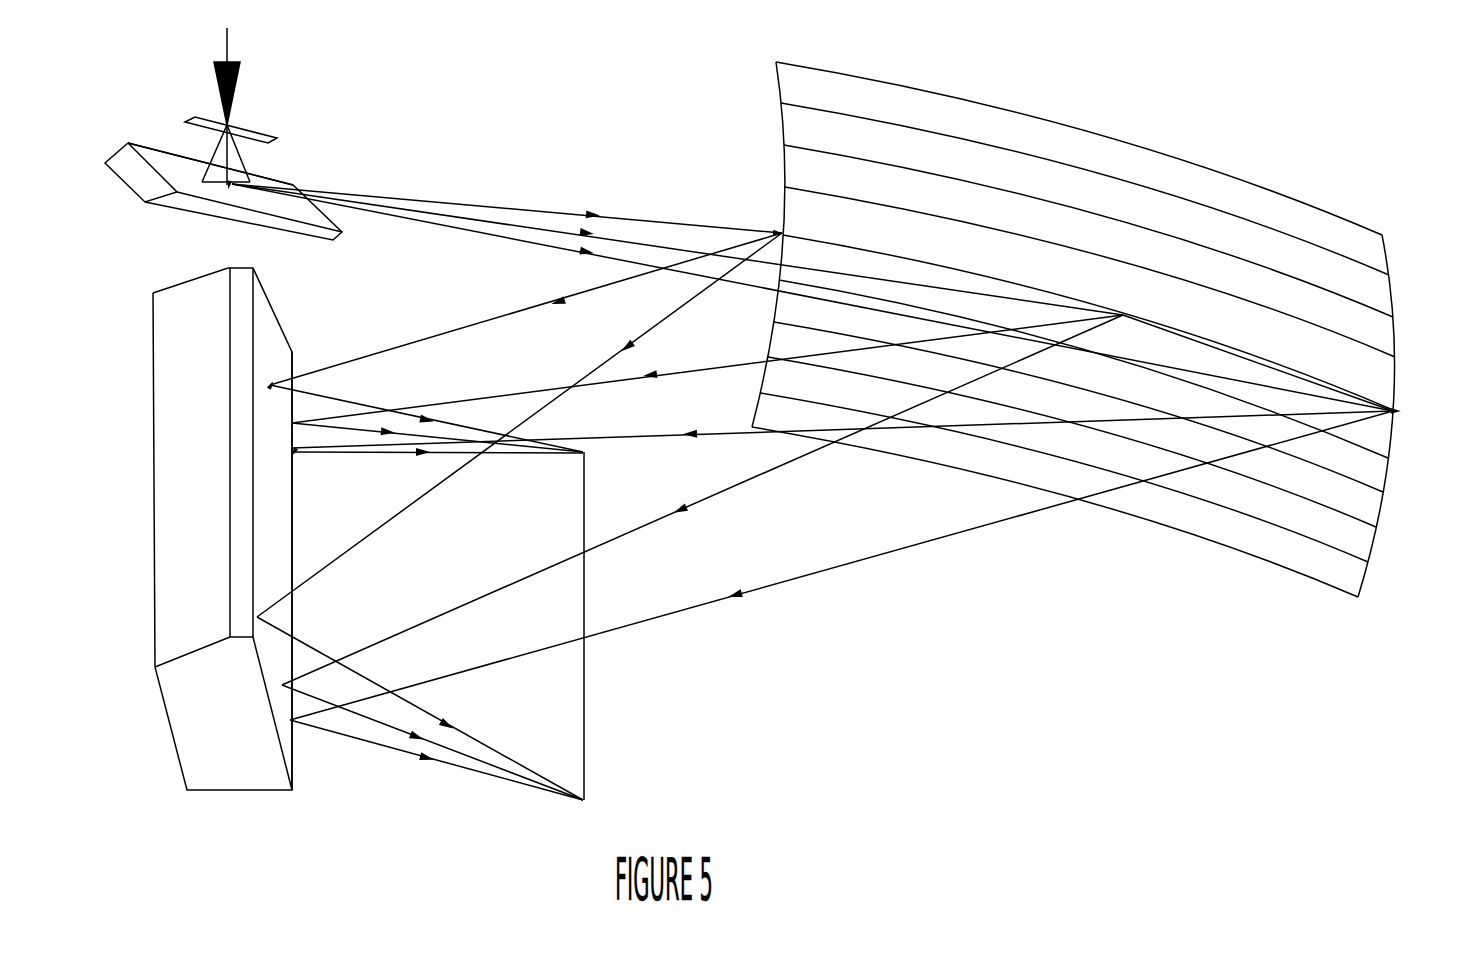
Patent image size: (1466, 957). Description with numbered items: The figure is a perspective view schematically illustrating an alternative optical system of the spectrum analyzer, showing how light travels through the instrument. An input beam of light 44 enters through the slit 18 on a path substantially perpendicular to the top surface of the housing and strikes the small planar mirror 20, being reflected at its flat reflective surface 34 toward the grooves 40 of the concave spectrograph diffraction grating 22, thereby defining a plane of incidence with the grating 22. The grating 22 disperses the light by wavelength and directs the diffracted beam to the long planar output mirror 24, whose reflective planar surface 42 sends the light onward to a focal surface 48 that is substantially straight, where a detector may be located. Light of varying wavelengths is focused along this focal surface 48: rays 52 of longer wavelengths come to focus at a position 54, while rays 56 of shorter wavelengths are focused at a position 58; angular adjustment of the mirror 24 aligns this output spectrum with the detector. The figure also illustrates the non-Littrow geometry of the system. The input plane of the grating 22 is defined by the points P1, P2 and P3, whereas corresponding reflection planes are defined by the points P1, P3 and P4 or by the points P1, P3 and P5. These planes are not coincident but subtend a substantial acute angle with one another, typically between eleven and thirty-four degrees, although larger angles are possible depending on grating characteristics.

The input beam of light 44 is at (228, 38).
The slit 18 is at (258, 131).
The mirror 20 is at (212, 164).
The flat reflective surface 34 is at (163, 154).
The spectrograph diffraction grating 22 is at (1058, 322).
The grooves 40 is at (787, 132).
The output mirror 24 is at (255, 572).
The reflective planar surface 42 is at (298, 748).
The focal surface 48 is at (587, 725).
The rays of light of longer wavelengths 52 is at (403, 454).
The position 54 is at (588, 454).
The rays of light of shorter wavelengths 56 is at (452, 766).
The position 58 is at (587, 800).
The point P1 is at (779, 231).
The point P2 is at (229, 190).
The point P3 is at (1400, 412).
The point P4 is at (272, 383).
The point P5 is at (294, 453).